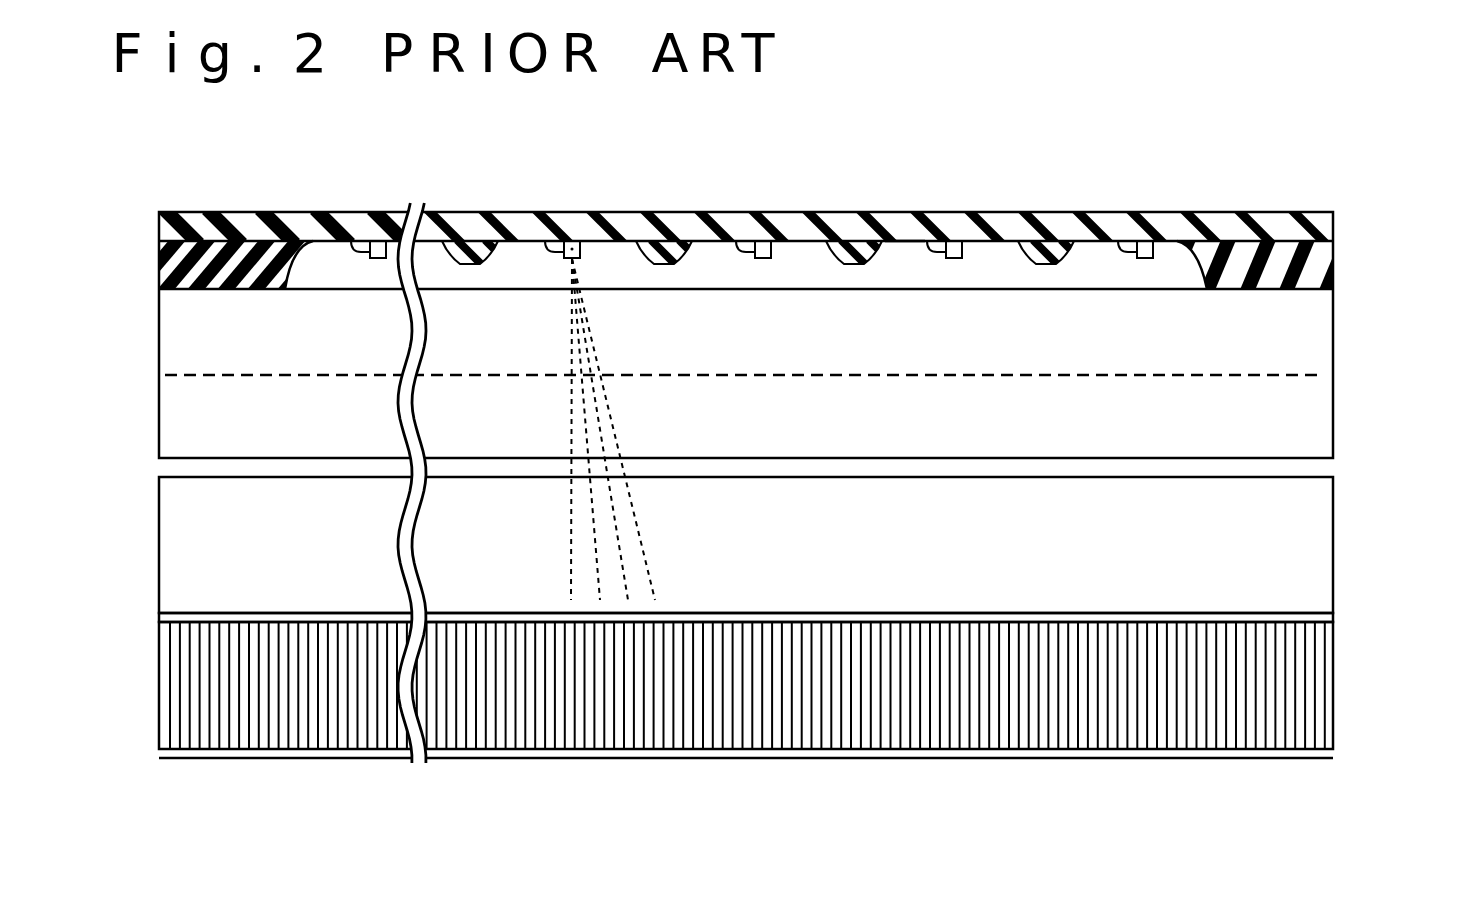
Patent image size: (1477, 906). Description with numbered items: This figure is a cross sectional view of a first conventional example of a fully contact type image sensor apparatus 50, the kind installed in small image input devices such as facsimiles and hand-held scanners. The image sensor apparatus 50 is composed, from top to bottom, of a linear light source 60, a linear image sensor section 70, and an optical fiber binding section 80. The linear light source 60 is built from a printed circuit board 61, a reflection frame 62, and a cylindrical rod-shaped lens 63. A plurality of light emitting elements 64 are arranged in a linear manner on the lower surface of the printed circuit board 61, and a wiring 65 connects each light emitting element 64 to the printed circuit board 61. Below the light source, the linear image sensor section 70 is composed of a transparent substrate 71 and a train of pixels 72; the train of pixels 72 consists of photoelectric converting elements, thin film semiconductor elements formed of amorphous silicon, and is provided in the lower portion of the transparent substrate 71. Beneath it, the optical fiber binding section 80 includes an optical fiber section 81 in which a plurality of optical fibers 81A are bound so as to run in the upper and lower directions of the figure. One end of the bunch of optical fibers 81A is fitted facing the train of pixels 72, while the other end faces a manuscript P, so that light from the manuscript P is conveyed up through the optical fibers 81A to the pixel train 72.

The image sensor apparatus 50 is at (142, 840).
The linear light source 60 is at (1410, 200).
The printed circuit board 61 is at (1330, 223).
The reflection frame 62 is at (1330, 263).
The cylindrical rod-shaped lens 63 is at (1322, 398).
The light emitting elements 64 is at (1165, 240).
The wiring 65 is at (907, 238).
The linear image sensor section 70 is at (810, 552).
The transparent substrate 71 is at (1330, 552).
The train of pixels 72 is at (781, 614).
The optical fiber binding section 80 is at (810, 727).
The optical fiber section 81 is at (1330, 687).
The optical fibers 81A is at (311, 727).
The manuscript P is at (1155, 759).